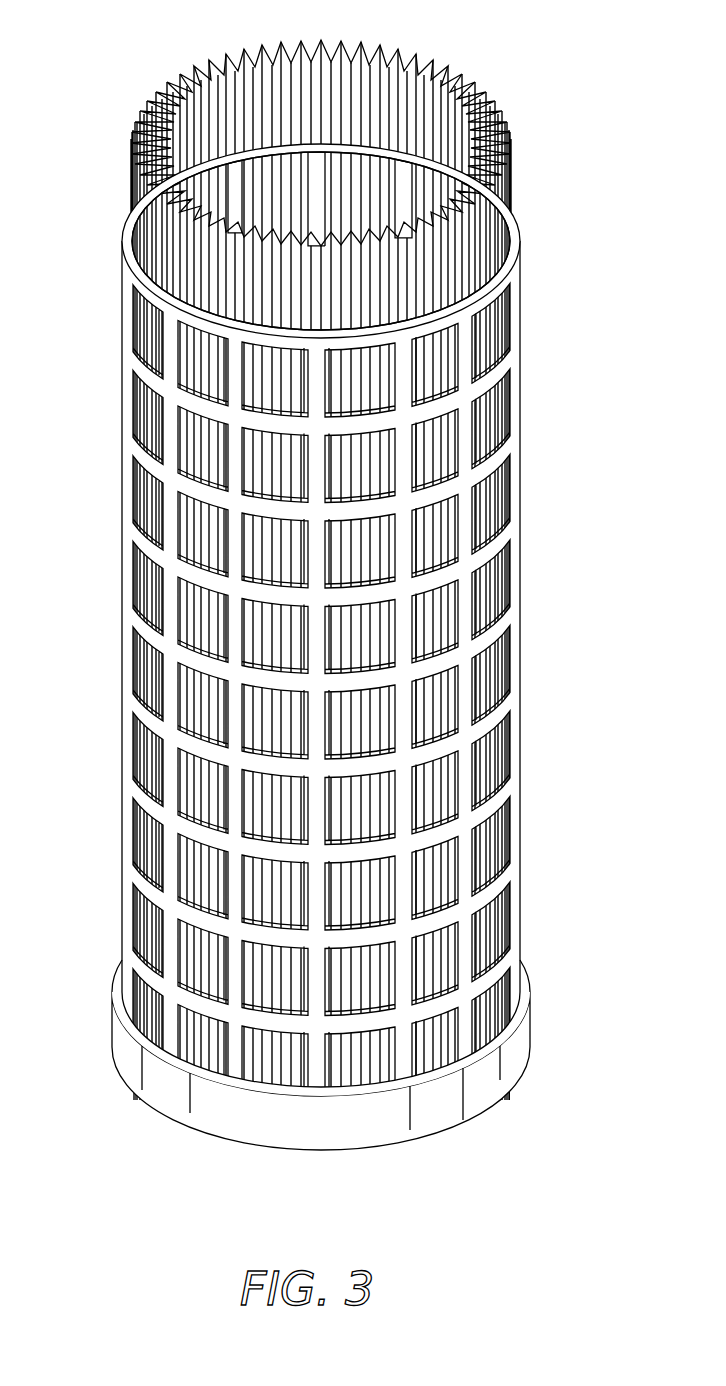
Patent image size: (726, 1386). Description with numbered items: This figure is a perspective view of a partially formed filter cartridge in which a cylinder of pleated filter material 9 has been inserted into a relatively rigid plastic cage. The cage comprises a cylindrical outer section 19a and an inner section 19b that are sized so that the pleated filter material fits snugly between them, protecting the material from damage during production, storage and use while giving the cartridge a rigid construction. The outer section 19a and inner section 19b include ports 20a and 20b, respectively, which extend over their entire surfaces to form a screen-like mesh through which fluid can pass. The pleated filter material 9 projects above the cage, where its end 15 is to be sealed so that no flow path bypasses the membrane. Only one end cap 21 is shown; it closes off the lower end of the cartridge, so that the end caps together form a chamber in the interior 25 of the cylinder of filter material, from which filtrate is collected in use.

The filter element 9 is at (176, 62).
The end 15 is at (128, 140).
The interior 25 is at (291, 188).
The cylindrical outer section 19a is at (512, 265).
The inner section 19b is at (372, 150).
The ports 20a is at (520, 368).
The ports 20b is at (372, 199).
The end cap 21 is at (500, 1052).